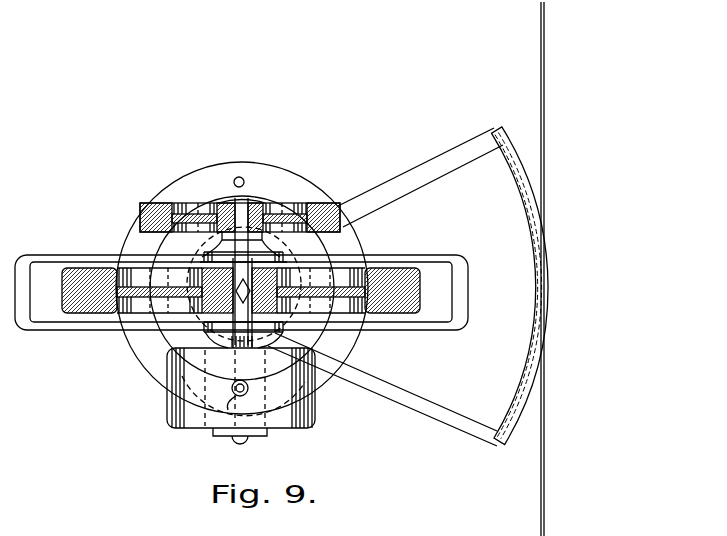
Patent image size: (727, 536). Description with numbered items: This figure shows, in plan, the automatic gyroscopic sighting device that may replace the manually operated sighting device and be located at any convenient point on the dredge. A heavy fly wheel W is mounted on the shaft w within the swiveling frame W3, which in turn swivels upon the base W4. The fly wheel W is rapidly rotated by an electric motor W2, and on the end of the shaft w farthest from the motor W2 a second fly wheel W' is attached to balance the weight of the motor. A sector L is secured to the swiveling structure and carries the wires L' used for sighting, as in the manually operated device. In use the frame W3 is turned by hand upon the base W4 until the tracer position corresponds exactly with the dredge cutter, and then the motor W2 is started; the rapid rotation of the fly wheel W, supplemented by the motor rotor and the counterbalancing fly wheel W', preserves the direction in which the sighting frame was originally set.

The shaft w is at (244, 203).
The counterbalancing fly wheel W' is at (246, 208).
The fly wheel W is at (251, 272).
The electric motor W2 is at (292, 428).
The swiveling frame W3 is at (68, 331).
The base W4 is at (150, 349).
The sector L is at (408, 286).
The wires L' is at (556, 269).